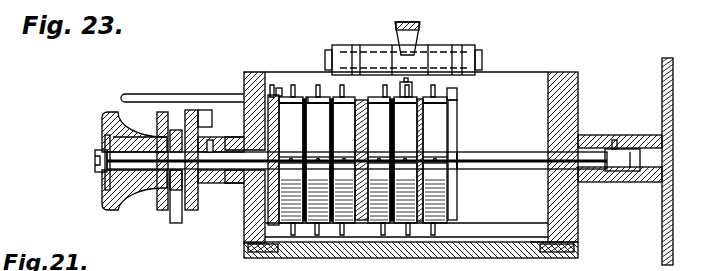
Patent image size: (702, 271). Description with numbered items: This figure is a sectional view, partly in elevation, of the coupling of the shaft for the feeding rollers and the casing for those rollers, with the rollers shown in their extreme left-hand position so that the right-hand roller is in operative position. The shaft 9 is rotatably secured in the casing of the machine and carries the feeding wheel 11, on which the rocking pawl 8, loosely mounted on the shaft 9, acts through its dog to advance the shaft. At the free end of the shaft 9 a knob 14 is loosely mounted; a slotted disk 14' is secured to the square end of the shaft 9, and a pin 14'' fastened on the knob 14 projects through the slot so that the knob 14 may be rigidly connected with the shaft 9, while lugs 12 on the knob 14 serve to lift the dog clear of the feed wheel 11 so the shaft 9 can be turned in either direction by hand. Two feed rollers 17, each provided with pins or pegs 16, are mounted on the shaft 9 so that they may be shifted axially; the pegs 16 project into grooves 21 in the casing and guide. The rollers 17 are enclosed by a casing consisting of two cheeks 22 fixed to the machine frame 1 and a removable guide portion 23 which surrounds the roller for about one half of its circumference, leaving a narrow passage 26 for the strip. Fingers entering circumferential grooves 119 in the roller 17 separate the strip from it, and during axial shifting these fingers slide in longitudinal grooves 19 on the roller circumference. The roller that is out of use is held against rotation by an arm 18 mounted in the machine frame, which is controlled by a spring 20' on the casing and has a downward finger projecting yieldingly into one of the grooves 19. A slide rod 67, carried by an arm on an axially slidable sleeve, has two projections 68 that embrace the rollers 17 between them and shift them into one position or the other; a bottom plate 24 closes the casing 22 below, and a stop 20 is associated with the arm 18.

The frame wall 1 is at (662, 93).
The rocking pawl 8 is at (177, 223).
The shaft 9 is at (532, 153).
The feeding wheel 11 is at (197, 115).
The lugs 12 is at (168, 112).
The knob 14 is at (134, 161).
The disk 14' is at (268, 172).
The pin 14'' is at (140, 131).
The pins or pegs 16 is at (318, 238).
The feed roller 17 is at (448, 182).
The arm 18 is at (456, 55).
The grooves 19 is at (352, 60).
The stop block 20 is at (433, 64).
The spring 20' is at (420, 32).
The grooves 21 is at (427, 236).
The cheeks 22 is at (247, 193).
The guide portion 23 is at (520, 80).
The base 24 is at (530, 236).
The passage 26 is at (250, 219).
The slide rod 67 is at (160, 110).
The projections 68 is at (279, 90).
The grooves 119 is at (336, 97).